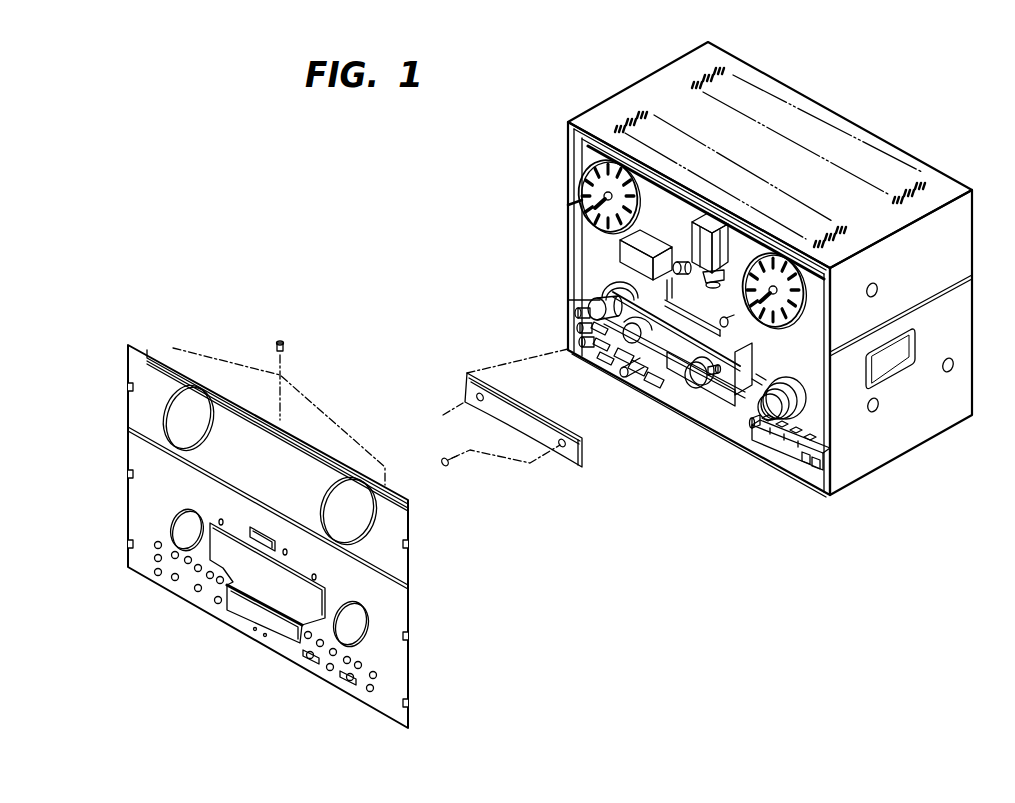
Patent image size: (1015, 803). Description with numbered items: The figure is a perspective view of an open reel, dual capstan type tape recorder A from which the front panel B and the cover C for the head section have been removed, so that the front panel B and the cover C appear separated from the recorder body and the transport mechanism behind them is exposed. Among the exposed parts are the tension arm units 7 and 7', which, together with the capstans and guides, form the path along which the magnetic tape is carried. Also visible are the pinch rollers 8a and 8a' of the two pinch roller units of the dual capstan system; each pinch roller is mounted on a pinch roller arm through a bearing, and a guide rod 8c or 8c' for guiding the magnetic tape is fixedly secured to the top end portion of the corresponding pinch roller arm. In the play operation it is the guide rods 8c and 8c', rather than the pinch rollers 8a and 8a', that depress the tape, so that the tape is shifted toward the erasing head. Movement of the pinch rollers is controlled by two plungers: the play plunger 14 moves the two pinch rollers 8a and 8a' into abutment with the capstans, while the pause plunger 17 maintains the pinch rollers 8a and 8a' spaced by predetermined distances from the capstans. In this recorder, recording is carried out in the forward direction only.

The tape recorder A is at (603, 103).
The front panel B is at (411, 608).
The cover C is at (578, 467).
The tension arm unit 7 is at (778, 453).
The tension arm unit 7' is at (581, 298).
The pinch roller 8a is at (691, 417).
The pinch roller 8a' is at (626, 371).
The guide rod 8c is at (728, 436).
The guide rod 8c' is at (580, 352).
The play plunger 14 is at (690, 240).
The pause plunger 17 is at (626, 251).